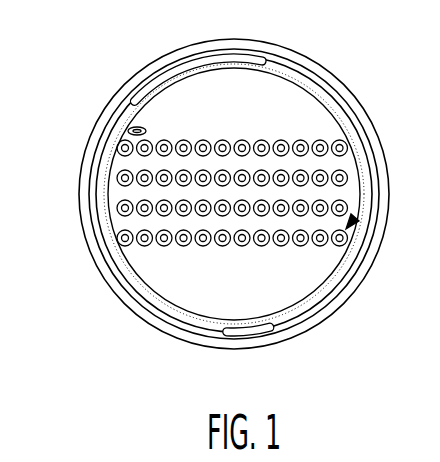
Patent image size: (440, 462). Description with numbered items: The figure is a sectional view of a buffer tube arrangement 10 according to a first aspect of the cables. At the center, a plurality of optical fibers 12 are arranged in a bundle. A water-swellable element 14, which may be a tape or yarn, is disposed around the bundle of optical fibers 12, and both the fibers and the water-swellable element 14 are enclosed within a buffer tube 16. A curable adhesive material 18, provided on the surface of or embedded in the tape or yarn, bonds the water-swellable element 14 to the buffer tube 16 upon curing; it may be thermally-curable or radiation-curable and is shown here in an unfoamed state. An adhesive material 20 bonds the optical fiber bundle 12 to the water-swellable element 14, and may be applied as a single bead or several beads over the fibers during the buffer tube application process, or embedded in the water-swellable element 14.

The buffer tube arrangement 10 is at (209, 203).
The optical fibers 12 is at (214, 194).
The water-swellable element 14 is at (194, 189).
The buffer tube 16 is at (234, 217).
The curable adhesive material 18 is at (202, 203).
The adhesive material 20 is at (97, 111).